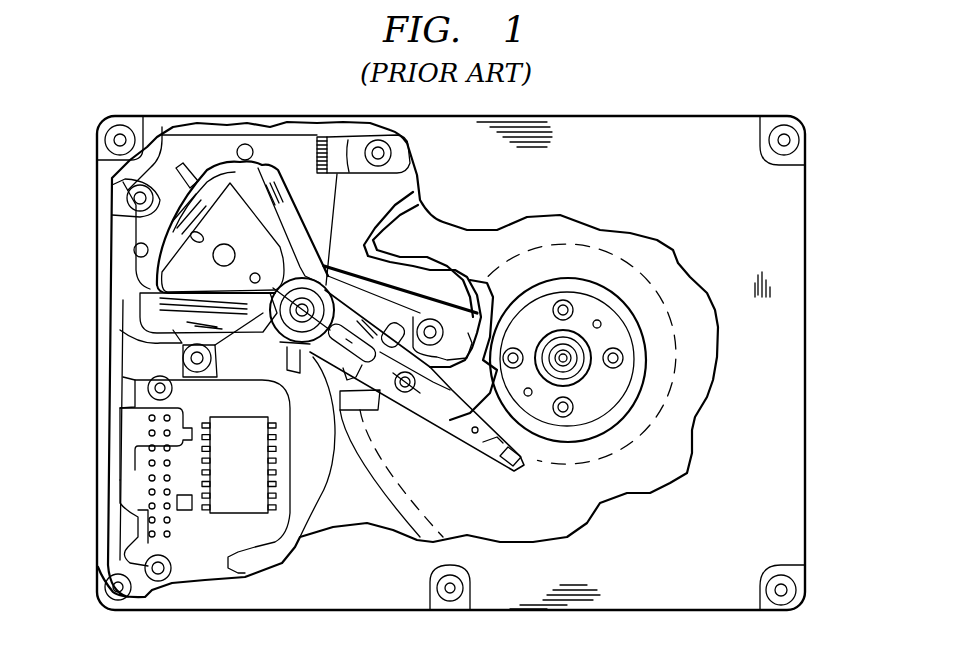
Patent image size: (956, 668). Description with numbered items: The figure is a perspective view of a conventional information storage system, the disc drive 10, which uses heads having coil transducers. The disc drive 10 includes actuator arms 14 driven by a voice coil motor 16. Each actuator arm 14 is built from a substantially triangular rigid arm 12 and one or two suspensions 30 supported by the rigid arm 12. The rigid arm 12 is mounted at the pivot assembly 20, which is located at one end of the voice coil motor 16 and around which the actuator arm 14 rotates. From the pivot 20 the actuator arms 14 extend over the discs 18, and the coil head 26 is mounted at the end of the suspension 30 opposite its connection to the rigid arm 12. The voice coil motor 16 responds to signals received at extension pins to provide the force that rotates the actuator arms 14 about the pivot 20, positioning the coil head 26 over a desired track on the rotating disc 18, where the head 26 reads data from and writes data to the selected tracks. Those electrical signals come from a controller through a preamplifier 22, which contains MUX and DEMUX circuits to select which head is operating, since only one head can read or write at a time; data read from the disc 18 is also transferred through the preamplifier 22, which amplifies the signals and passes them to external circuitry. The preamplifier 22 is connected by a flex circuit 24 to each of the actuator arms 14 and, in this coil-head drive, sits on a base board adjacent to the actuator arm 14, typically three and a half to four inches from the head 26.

The disc drive 10 is at (847, 367).
The rigid arm 12 is at (409, 393).
The actuator arm 14 is at (433, 318).
The voice coil motor 16 is at (178, 272).
The disc 18 is at (628, 440).
The pivot assembly 20 is at (325, 280).
The preamplifier 22 is at (247, 497).
The flex circuit 24 is at (313, 495).
The coil head 26 is at (512, 467).
The suspension 30 is at (457, 423).